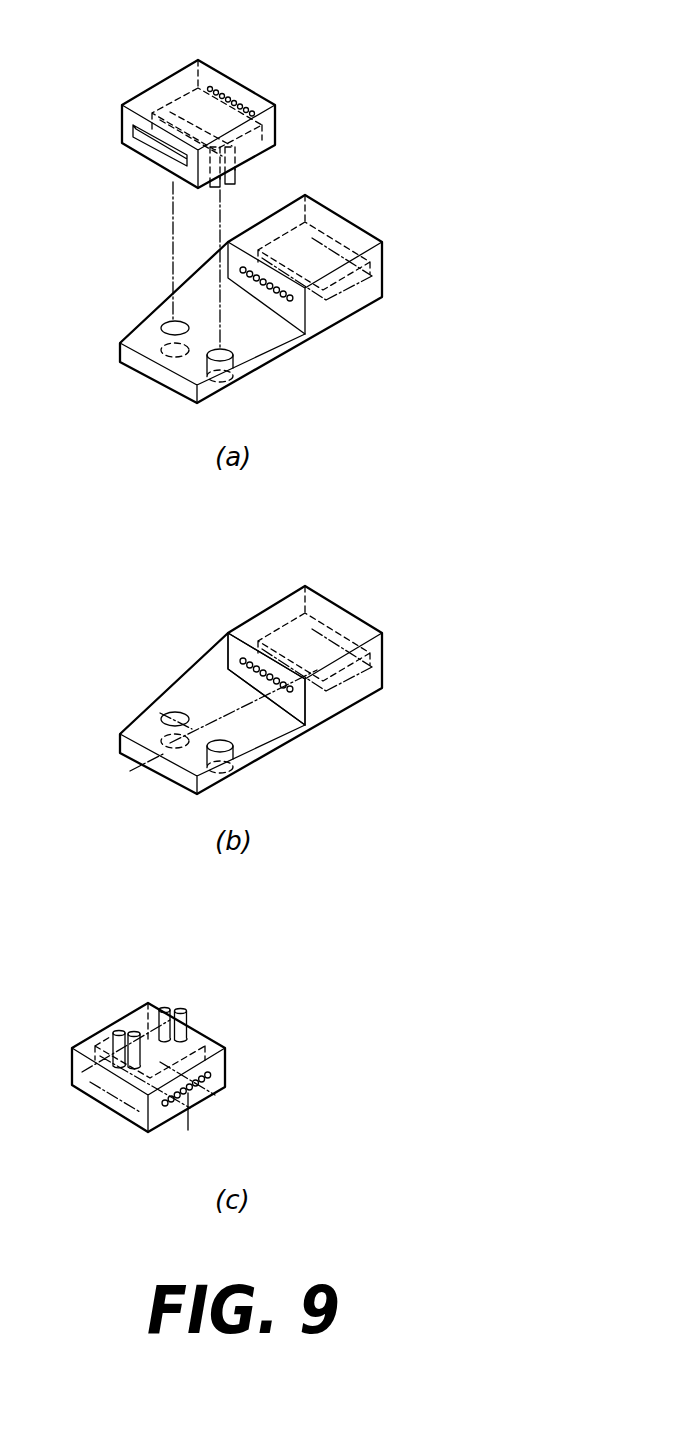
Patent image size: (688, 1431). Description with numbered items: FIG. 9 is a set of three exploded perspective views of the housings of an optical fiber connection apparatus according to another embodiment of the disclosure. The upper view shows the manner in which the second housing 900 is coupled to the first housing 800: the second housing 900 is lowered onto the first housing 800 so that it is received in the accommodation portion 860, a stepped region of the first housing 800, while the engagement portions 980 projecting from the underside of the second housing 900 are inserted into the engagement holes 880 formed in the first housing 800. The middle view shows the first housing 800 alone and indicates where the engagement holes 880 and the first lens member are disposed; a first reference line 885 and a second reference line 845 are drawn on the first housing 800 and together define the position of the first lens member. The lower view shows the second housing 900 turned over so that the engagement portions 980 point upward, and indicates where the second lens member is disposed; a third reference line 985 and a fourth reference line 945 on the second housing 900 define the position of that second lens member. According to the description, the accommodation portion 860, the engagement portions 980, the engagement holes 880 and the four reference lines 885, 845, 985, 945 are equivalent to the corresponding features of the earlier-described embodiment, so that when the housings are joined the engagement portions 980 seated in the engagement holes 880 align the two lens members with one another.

The second housing 900 is at (134, 84).
The engagement portions 980 is at (233, 173).
The first housing 800 is at (296, 299).
The accommodation portion 860 is at (267, 340).
The engagement holes 880 is at (168, 326).
The second reference line 845 is at (237, 618).
The first reference line 885 is at (150, 684).
The third reference line 985 is at (151, 986).
The fourth reference line 945 is at (232, 1073).